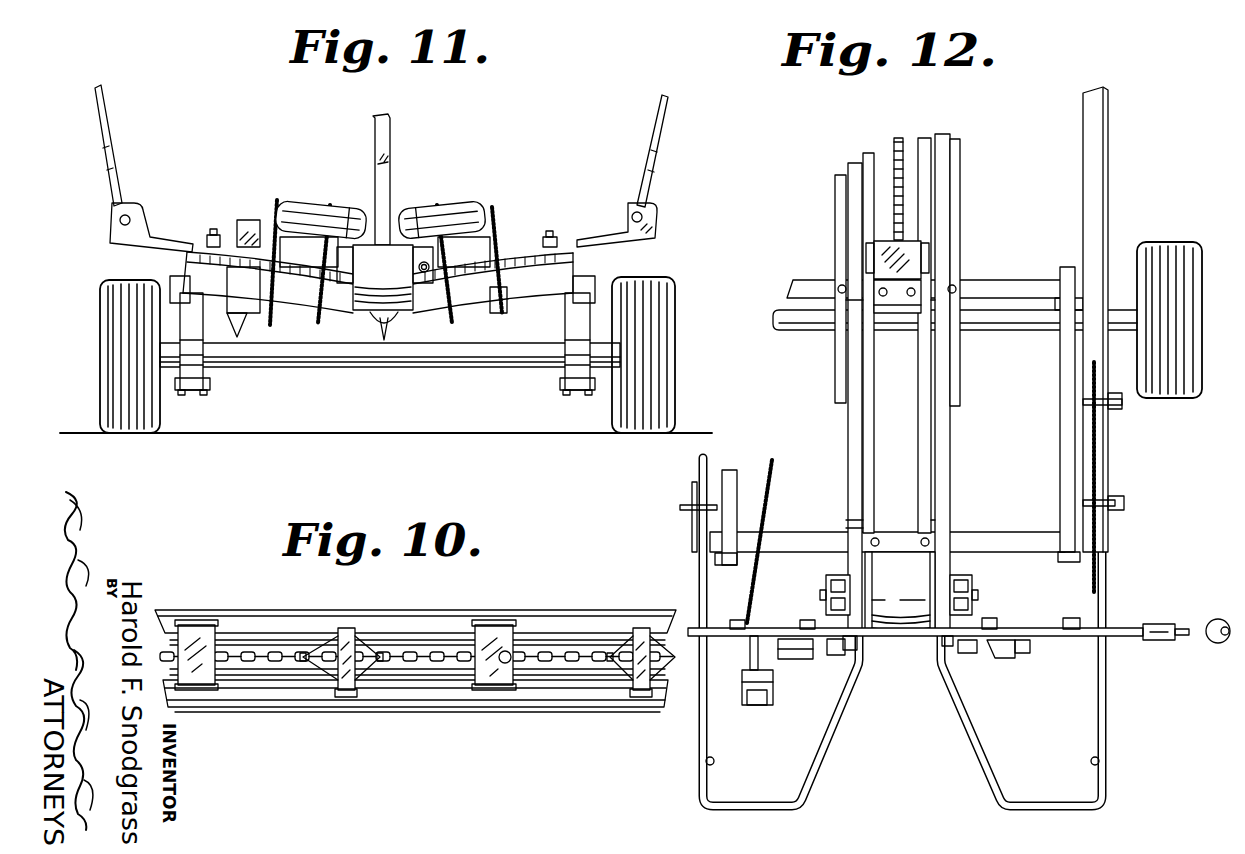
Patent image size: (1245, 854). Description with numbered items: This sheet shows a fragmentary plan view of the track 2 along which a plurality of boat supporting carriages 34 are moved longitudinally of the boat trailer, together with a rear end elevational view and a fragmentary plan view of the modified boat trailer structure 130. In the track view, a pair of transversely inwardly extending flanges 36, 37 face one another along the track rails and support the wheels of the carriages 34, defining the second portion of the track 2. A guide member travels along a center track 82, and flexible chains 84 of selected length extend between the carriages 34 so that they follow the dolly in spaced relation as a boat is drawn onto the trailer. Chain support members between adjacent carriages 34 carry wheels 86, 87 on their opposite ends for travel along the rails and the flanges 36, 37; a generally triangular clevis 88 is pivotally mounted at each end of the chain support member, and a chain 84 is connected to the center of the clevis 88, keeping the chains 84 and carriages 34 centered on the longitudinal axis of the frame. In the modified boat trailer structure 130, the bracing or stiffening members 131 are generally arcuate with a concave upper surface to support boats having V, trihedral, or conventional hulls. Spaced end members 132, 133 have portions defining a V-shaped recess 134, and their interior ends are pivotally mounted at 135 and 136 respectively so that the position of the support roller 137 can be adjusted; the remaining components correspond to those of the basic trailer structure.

In FIG. 10, the track 2 is at (393, 713).
In FIG. 10, the boat supporting carriage 34 is at (212, 645).
In FIG. 10, the flange 36 is at (573, 685).
In FIG. 10, the flange 37 is at (545, 640).
In FIG. 10, the center track 82 is at (425, 640).
In FIG. 10, the chain 84 is at (447, 663).
In FIG. 10, the wheel 86 is at (337, 694).
In FIG. 10, the wheel 87 is at (340, 628).
In FIG. 10, the clevis 88 is at (627, 645).
In FIG. 11, the modified boat trailer structure 130 is at (478, 181).
In FIG. 12, the modified boat trailer structure 130 is at (1115, 181).
In FIG. 11, the bracing or stiffening member 131 is at (530, 295).
In FIG. 12, the bracing or stiffening member 131 is at (970, 532).
In FIG. 11, the end member 132 is at (303, 273).
In FIG. 12, the end member 132 is at (702, 795).
In FIG. 11, the end member 133 is at (530, 262).
In FIG. 12, the end member 133 is at (1102, 795).
In FIG. 12, the V-shaped recess 134 is at (858, 650).
In FIG. 12, the pivotal mounting 135 is at (960, 652).
In FIG. 11, the pivotal mounting 136 is at (312, 201).
In FIG. 11, the support roller 137 is at (459, 205).